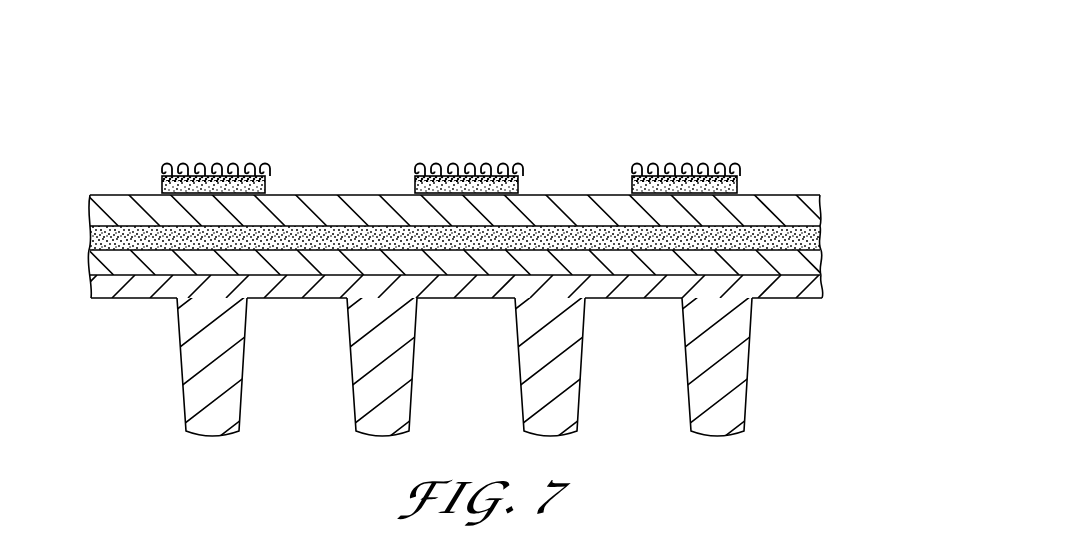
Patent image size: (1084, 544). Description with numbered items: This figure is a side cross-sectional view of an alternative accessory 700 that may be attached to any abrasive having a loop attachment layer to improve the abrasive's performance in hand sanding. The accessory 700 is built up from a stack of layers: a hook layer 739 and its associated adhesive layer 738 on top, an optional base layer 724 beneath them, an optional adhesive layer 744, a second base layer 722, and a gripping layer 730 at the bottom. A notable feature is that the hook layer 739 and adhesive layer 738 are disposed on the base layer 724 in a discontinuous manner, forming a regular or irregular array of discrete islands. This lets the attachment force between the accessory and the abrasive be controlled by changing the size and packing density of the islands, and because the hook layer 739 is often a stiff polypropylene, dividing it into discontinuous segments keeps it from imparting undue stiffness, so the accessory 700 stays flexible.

The accessory 700 is at (794, 103).
The second base layer 722 is at (818, 258).
The base layer 724 is at (811, 202).
The gripping layer 730 is at (822, 435).
The adhesive layer 738 is at (633, 192).
The hook layer 739 is at (747, 177).
The adhesive layer 744 is at (813, 237).